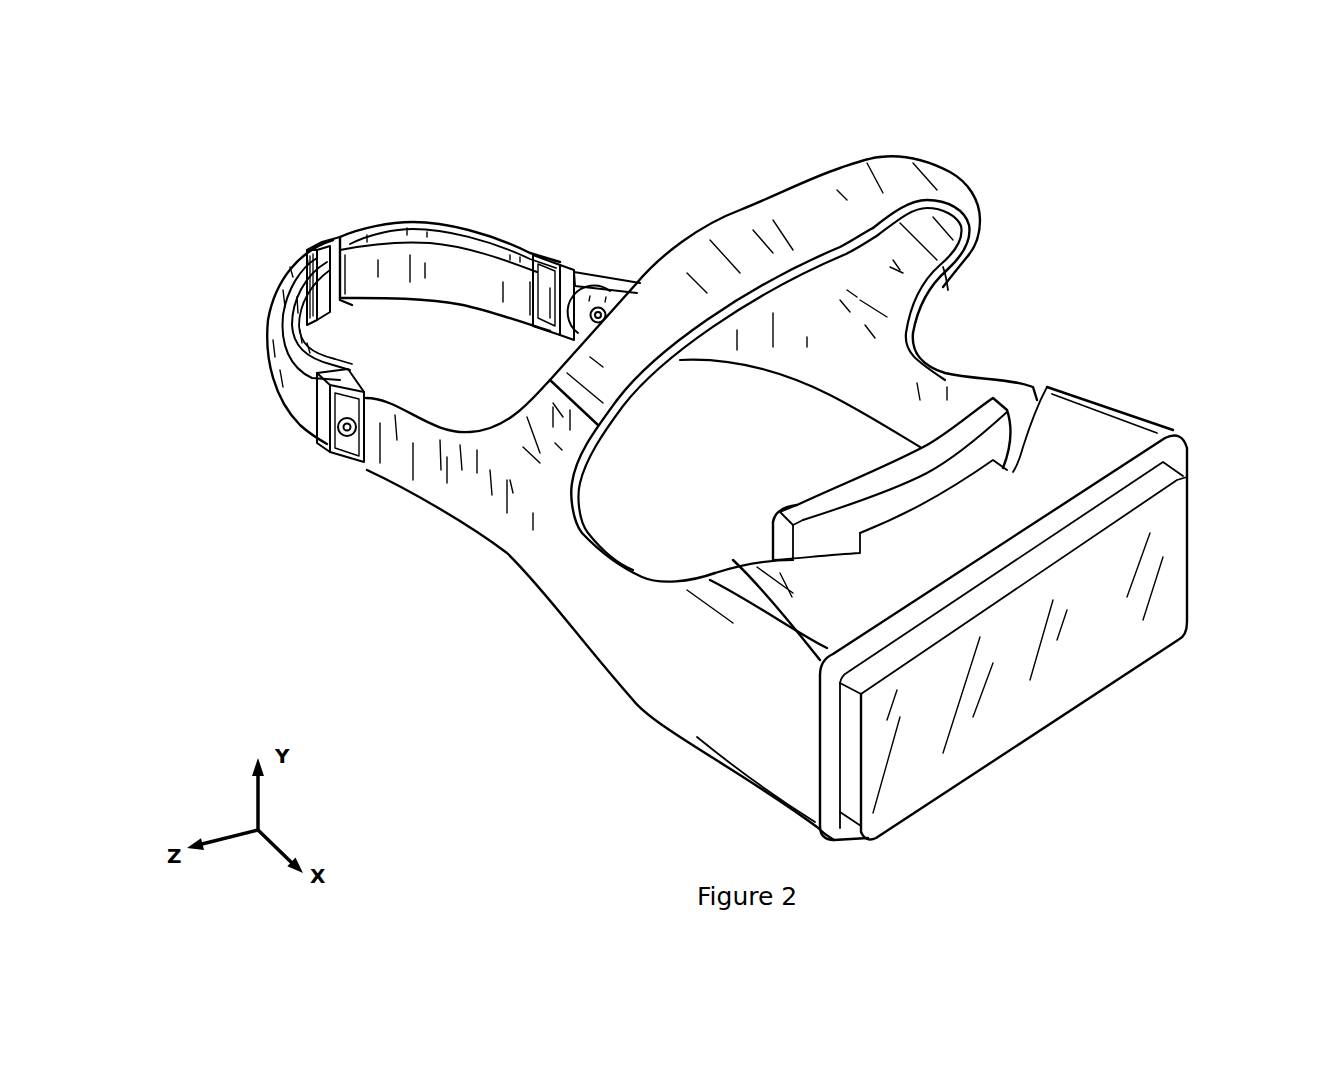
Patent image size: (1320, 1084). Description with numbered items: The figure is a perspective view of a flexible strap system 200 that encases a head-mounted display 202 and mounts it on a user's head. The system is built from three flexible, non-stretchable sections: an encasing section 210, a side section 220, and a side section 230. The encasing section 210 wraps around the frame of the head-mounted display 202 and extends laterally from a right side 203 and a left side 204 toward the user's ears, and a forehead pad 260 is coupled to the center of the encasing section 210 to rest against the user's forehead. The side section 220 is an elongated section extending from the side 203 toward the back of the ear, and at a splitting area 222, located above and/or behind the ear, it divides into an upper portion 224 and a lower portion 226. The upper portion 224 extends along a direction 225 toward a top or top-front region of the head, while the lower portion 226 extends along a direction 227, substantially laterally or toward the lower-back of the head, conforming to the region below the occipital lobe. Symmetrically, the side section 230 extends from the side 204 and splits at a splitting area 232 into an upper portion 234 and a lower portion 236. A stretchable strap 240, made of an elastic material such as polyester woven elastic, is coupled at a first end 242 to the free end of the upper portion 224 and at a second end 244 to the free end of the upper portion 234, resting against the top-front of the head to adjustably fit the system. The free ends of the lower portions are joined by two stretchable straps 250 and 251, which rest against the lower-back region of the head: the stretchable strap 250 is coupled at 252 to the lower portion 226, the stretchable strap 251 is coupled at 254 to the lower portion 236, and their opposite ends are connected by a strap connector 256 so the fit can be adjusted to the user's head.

The flexible strap system 200 is at (221, 118).
The head-mounted display 202 is at (1187, 550).
The side of the encasing section 203 is at (703, 718).
The side of the encasing section 204 is at (1108, 372).
The encasing section 210 is at (1130, 403).
The side section 220 is at (605, 560).
The splitting area 222 is at (489, 442).
The upper portion 224 is at (578, 462).
The direction 225 is at (544, 353).
The lower portion 226 is at (428, 485).
The direction 227 is at (443, 417).
The side section 230 is at (957, 368).
The splitting area 232 is at (854, 349).
The upper portion 234 is at (972, 260).
The lower portion 236 is at (752, 370).
The stretchable strap 240 is at (880, 158).
The coupling of first end of stretchable strap 242 is at (680, 363).
The coupling of second end of stretchable strap 244 is at (996, 228).
The stretchable strap 250 is at (422, 222).
The stretchable strap 251 is at (276, 293).
The coupling of first end of stretchable strap 252 is at (334, 479).
The coupling of first end of stretchable strap 254 is at (601, 263).
The strap connector 256 is at (338, 243).
The forehead pad 260 is at (1045, 388).